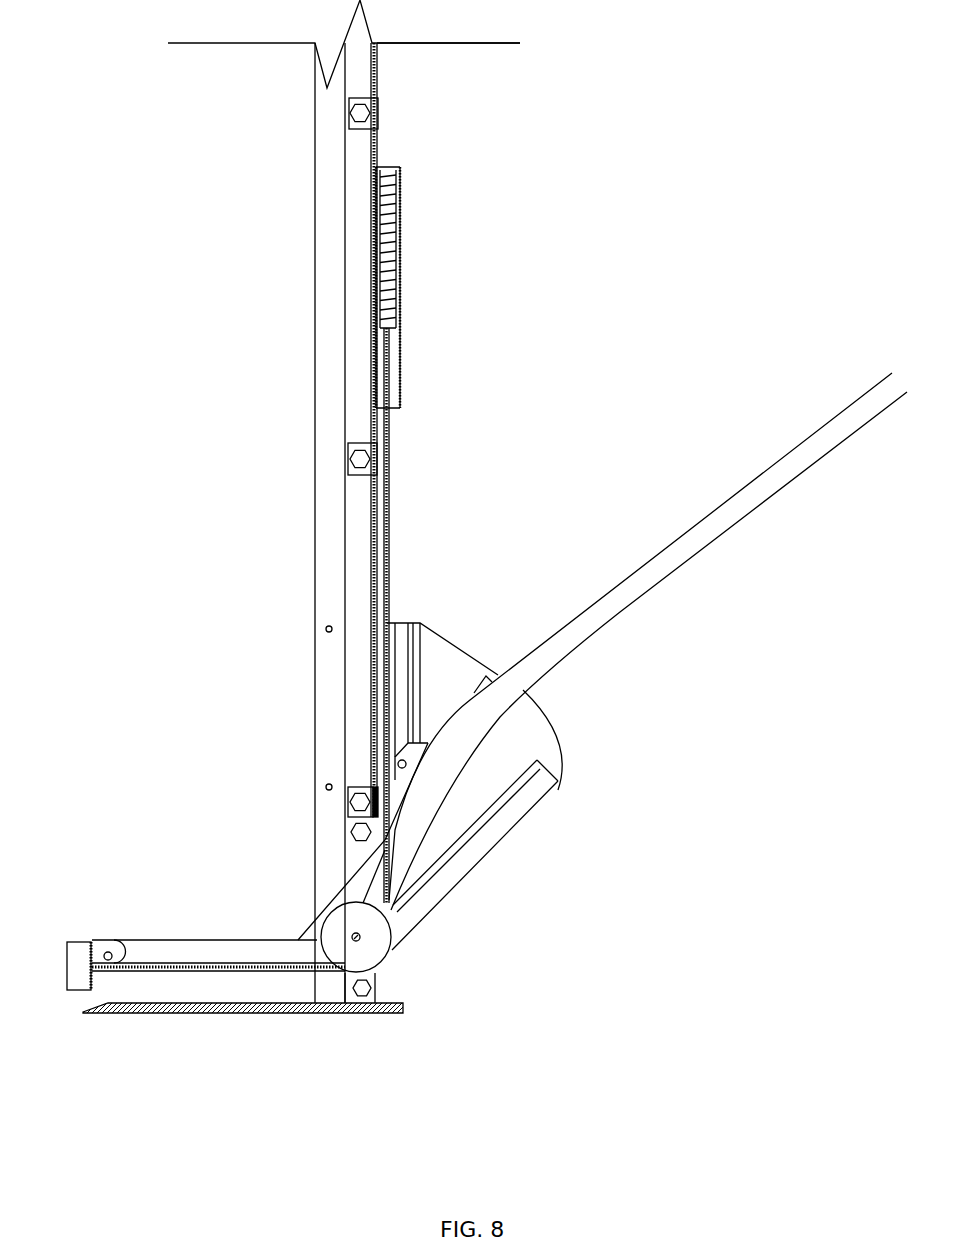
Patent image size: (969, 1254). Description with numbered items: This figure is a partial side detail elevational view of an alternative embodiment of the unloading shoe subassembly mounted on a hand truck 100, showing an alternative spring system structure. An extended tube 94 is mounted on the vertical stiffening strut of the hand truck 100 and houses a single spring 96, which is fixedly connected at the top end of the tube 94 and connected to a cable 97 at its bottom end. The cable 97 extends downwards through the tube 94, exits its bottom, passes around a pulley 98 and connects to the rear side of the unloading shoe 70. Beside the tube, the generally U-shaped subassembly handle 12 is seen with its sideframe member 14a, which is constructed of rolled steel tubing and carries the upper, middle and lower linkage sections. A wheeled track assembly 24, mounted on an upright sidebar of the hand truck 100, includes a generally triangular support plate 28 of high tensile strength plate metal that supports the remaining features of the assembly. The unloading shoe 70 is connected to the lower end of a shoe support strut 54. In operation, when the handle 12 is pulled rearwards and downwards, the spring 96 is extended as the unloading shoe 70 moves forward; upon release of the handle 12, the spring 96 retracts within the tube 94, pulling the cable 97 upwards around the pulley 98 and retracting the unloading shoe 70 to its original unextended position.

The hand truck 100 is at (325, 325).
The spring 96 is at (385, 232).
The extended tube 94 is at (402, 358).
The cable 97 is at (390, 467).
The subassembly handle 12 is at (648, 614).
The sideframe member 14a is at (717, 520).
The wheeled track assembly 24 is at (442, 655).
The support plate 28 is at (533, 737).
The pulley 98 is at (367, 952).
The shoe support strut 54 is at (227, 955).
The unloading shoe 70 is at (78, 960).